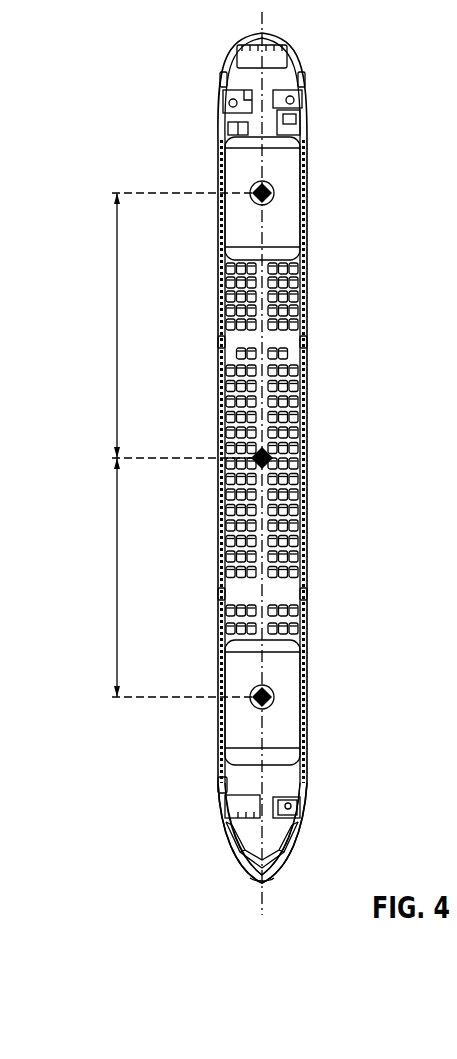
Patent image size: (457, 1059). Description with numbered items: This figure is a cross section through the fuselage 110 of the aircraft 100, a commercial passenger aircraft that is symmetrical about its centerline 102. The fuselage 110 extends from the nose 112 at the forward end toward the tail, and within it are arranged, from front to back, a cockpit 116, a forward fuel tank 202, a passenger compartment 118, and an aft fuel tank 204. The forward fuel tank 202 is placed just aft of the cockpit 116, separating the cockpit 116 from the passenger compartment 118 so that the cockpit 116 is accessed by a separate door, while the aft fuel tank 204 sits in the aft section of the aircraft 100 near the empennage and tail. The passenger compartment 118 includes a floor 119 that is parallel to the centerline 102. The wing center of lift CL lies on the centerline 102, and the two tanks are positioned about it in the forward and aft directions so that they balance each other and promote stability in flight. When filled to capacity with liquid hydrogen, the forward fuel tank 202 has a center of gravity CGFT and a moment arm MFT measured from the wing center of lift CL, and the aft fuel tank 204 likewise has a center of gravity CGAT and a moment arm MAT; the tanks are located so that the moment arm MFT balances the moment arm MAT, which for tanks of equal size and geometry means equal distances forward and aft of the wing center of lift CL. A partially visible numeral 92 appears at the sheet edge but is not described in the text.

The aircraft 100 is at (372, 36).
The centerline 102 is at (258, 14).
The aircraft fuselage section 92 is at (7, 256).
The aft fuel tank 204 is at (293, 212).
The forward fuel tank 202 is at (295, 720).
The passenger compartment 118 is at (303, 498).
The floor 119 is at (233, 595).
The fuselage 110 is at (308, 782).
The cockpit 116 is at (272, 835).
The nose 112 is at (270, 882).
The wing center of lift CL is at (268, 457).
The center of gravity of the aft fuel tank CGAT is at (264, 189).
The center of gravity of the forward fuel tank CGFT is at (264, 690).
The moment arm of the aft fuel tank MAT is at (117, 325).
The moment arm of the forward fuel tank MFT is at (117, 580).